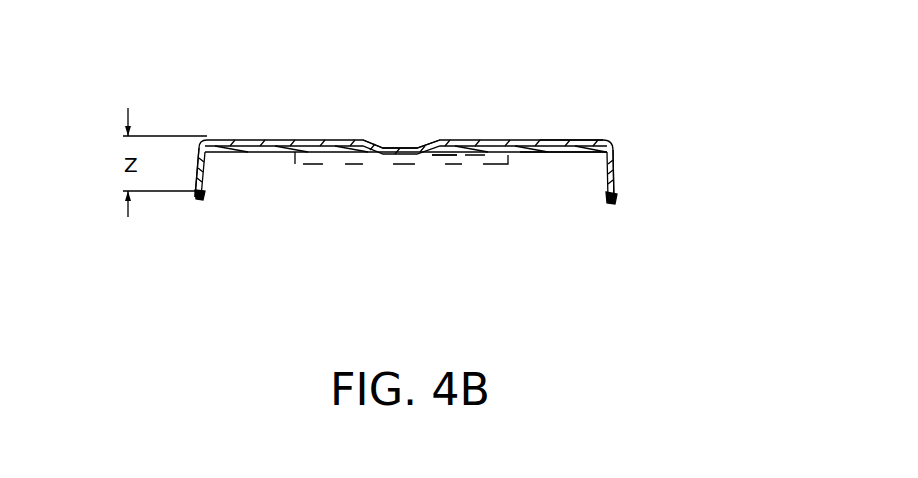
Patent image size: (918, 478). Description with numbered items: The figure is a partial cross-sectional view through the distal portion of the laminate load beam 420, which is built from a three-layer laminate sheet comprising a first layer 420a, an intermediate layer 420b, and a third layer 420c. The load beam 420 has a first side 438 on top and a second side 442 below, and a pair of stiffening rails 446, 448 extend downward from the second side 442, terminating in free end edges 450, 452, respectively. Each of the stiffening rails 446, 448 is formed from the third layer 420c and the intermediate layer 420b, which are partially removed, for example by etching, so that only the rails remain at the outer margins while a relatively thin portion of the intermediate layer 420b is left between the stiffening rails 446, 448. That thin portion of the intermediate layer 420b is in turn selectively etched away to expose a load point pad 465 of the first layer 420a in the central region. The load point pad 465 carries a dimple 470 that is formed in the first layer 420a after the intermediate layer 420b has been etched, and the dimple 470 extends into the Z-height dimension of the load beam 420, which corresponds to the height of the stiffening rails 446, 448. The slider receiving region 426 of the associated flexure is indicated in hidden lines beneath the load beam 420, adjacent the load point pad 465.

The laminate load beam 420 is at (488, 160).
The first layer 420a is at (207, 139).
The intermediate layer 420b is at (206, 175).
The third layer 420c is at (207, 177).
The dimple 470 is at (400, 140).
The first side 438 is at (578, 140).
The stiffening rail 446 is at (190, 162).
The stiffening rail 448 is at (594, 179).
The second side 442 is at (540, 155).
The free end edge 450 is at (197, 200).
The free end edge 452 is at (610, 205).
The slider receiving region 426 is at (376, 170).
The load point pad 465 is at (437, 152).